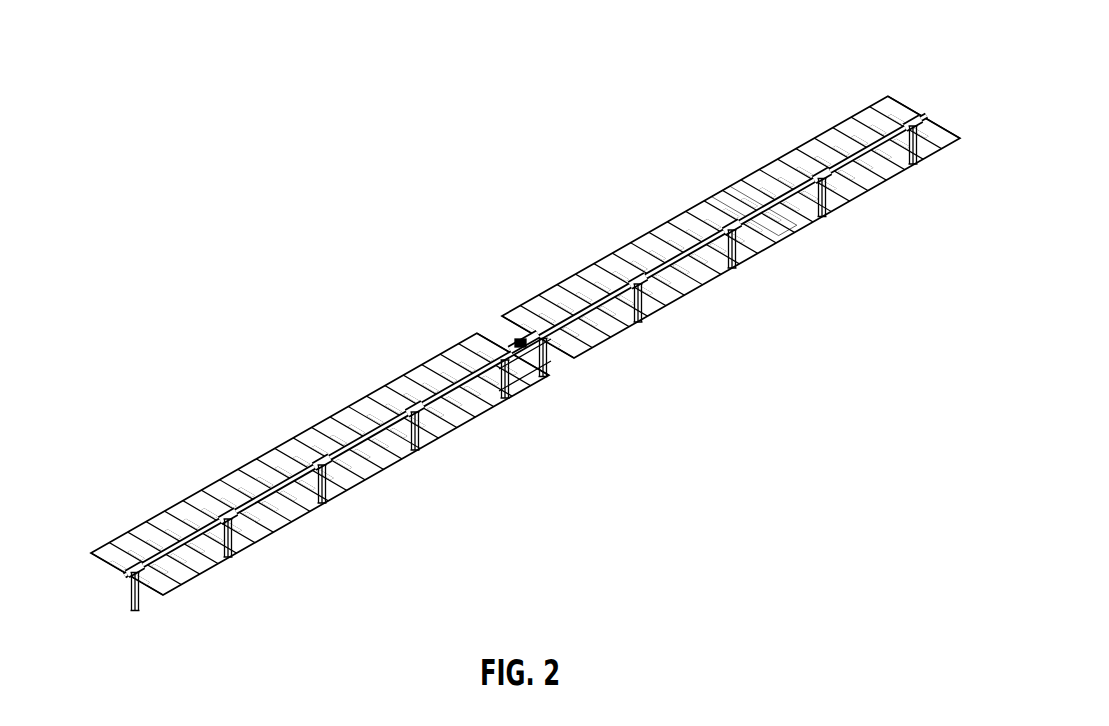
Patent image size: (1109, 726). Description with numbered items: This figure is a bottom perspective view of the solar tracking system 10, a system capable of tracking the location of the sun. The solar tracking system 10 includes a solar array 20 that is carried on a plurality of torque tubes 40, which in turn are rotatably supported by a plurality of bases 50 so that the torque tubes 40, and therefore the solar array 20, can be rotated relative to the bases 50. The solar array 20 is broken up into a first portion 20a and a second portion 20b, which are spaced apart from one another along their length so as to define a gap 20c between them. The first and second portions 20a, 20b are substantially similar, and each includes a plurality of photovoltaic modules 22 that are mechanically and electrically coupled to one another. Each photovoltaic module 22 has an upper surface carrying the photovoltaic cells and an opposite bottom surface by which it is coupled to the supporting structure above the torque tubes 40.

The solar tracking system 10 is at (268, 83).
The solar array 20 is at (70, 520).
The first portion 20a is at (713, 288).
The second portion 20b is at (256, 560).
The gap 20c is at (565, 369).
The photovoltaic modules 22 is at (792, 215).
The torque tubes 40 is at (438, 412).
The bases 50 is at (930, 153).